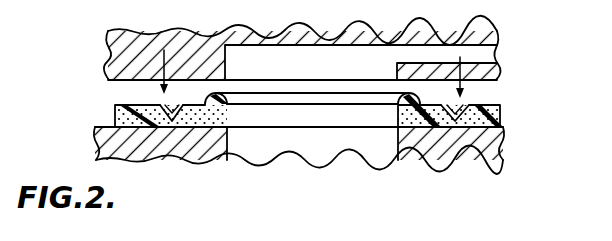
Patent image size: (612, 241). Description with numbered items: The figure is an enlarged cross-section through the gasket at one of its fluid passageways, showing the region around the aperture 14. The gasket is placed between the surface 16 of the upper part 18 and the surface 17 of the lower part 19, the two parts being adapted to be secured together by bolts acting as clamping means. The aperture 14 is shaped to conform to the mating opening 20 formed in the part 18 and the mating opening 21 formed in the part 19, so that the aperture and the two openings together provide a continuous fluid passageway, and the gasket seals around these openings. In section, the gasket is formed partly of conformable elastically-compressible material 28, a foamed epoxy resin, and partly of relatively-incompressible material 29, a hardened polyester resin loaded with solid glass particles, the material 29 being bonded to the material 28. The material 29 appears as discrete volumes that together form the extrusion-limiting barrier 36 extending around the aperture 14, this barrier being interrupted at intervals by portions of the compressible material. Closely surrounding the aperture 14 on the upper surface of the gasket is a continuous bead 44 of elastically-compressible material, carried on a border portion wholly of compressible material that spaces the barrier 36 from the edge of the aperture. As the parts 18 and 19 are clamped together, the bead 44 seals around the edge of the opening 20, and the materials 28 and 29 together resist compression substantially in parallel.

The aperture 14 is at (325, 117).
The surface 16 is at (493, 82).
The surface 17 is at (503, 125).
The part 18 is at (476, 40).
The part 19 is at (480, 144).
The opening 20 is at (310, 71).
The opening 21 is at (288, 135).
The conformable elastically-compressible material 28 is at (118, 114).
The relatively-incompressible material 29 is at (168, 125).
The extrusion-limiting barrier 36 is at (186, 127).
The continuous bead 44 is at (402, 97).